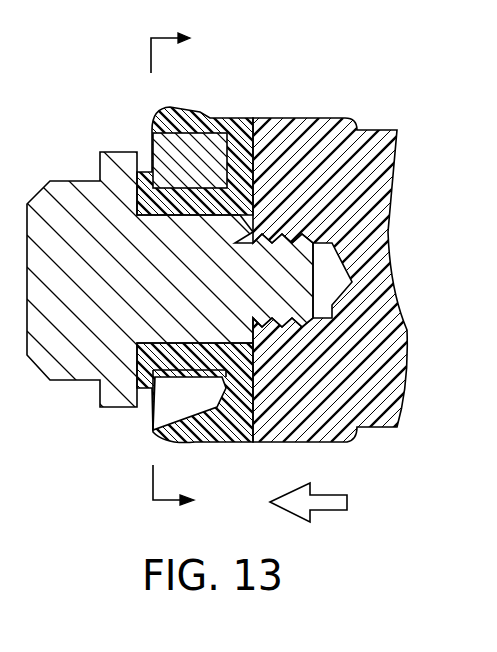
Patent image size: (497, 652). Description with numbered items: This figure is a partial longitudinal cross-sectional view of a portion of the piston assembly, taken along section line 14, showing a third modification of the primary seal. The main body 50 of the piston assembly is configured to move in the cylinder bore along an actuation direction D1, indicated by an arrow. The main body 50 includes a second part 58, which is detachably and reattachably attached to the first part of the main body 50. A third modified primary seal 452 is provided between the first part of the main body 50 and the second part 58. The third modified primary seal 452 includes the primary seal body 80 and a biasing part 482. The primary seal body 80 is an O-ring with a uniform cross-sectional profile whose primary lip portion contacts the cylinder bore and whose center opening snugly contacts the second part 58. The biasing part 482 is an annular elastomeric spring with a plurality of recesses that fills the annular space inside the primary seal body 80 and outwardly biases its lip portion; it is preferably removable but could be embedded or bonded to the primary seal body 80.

The section line 14 is at (172, 275).
The main body 50 is at (310, 93).
The second part 58 is at (62, 181).
The third modified primary seal 452 is at (197, 111).
The biasing part 482 is at (174, 421).
The primary seal body 80 is at (230, 443).
The actuation direction D1 is at (327, 509).